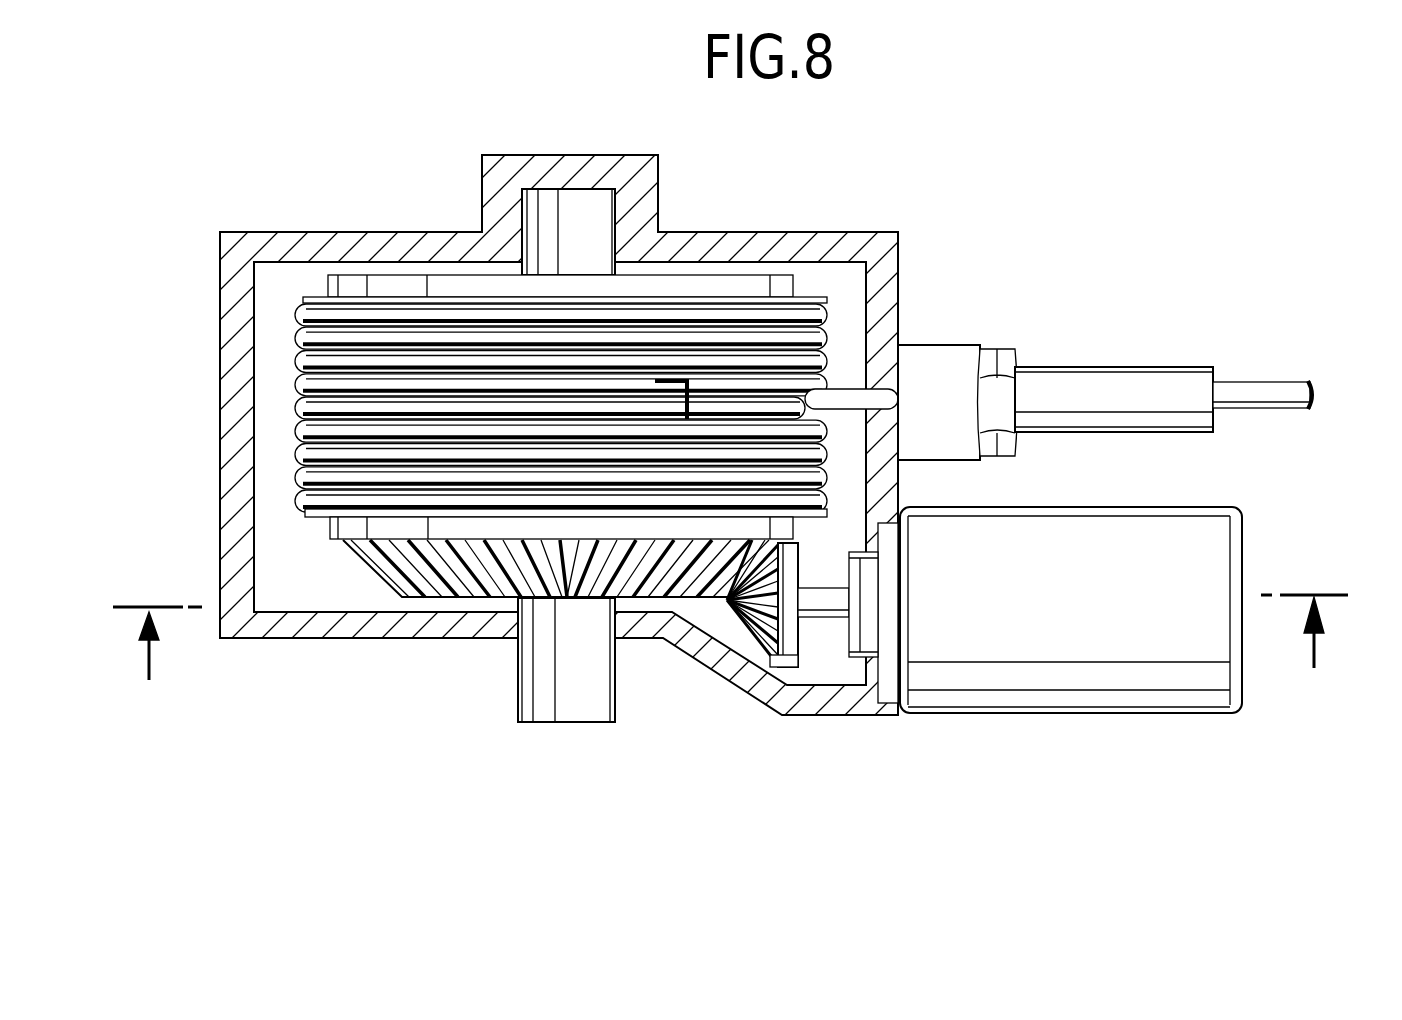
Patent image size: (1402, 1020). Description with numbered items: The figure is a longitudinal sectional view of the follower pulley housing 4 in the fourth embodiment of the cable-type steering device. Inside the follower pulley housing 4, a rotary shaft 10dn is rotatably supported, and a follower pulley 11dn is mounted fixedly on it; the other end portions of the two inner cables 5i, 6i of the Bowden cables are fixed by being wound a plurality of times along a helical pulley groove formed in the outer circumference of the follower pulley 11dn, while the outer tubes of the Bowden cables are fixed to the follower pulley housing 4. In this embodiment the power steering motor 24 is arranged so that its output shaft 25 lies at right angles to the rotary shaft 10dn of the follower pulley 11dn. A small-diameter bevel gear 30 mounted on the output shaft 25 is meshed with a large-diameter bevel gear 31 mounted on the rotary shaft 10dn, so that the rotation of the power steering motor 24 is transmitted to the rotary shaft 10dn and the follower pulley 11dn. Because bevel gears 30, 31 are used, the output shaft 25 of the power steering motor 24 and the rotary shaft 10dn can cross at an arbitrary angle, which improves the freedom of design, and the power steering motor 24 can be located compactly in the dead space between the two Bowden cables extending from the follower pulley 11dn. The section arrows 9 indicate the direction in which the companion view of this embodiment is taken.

The follower pulley housing 4 is at (835, 240).
The inner cable 5i is at (312, 333).
The inner cable 6i is at (310, 450).
The follower pulley 11dn is at (720, 282).
The rotary shaft 10dn is at (583, 705).
The large-diameter bevel gear 31 is at (395, 567).
The small-diameter bevel gear 30 is at (762, 632).
The output shaft 25 is at (817, 605).
The power steering motor 24 is at (1170, 525).
The section line 9 is at (730, 640).